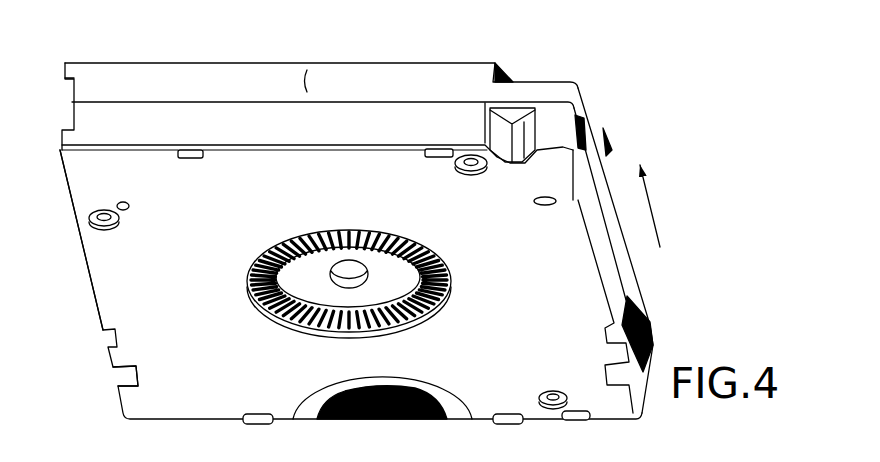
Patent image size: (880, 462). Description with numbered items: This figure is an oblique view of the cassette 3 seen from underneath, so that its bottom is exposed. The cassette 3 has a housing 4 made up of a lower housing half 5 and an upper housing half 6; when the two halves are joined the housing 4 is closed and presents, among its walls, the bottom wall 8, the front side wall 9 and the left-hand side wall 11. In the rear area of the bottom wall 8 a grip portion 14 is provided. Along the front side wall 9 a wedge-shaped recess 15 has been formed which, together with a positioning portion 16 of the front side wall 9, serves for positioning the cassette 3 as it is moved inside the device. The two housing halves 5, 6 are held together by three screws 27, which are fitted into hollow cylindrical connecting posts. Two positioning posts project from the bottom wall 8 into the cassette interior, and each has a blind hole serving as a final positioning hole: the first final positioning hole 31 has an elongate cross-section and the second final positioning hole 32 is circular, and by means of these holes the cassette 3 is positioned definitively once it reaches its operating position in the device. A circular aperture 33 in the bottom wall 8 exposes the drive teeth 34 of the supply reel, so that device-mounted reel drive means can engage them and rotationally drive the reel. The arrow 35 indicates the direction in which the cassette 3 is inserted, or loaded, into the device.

The cassette 3 is at (652, 118).
The housing 4 is at (67, 105).
The lower housing half 5 is at (88, 277).
The upper housing half 6 is at (504, 65).
The bottom wall 8 is at (140, 398).
The front side wall 9 is at (313, 56).
The left-hand side wall 11 is at (612, 263).
The grip portion 14 is at (438, 402).
The wedge-shaped recess 15 is at (517, 168).
The positioning portion 16 is at (162, 127).
The screws 27 is at (100, 230).
The first final positioning hole 31 is at (545, 207).
The second final positioning hole 32 is at (130, 205).
The circular aperture 33 is at (293, 328).
The drive teeth 34 is at (382, 233).
The arrow 35 is at (647, 193).